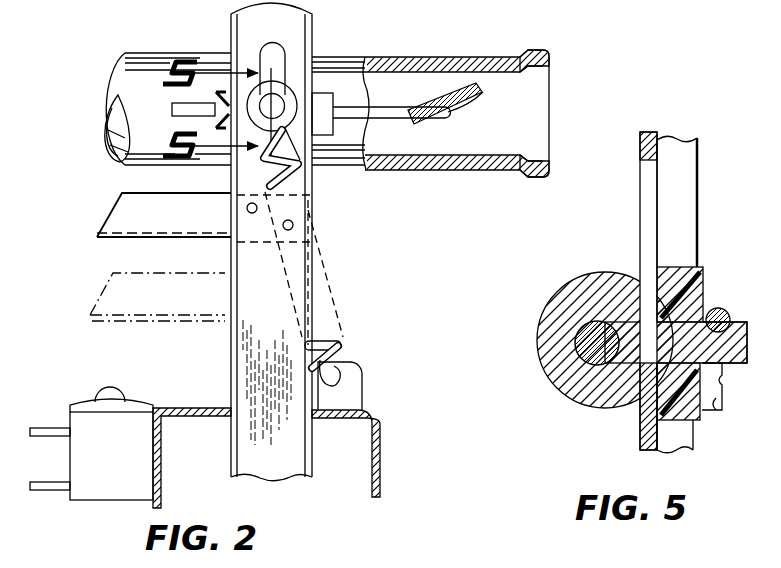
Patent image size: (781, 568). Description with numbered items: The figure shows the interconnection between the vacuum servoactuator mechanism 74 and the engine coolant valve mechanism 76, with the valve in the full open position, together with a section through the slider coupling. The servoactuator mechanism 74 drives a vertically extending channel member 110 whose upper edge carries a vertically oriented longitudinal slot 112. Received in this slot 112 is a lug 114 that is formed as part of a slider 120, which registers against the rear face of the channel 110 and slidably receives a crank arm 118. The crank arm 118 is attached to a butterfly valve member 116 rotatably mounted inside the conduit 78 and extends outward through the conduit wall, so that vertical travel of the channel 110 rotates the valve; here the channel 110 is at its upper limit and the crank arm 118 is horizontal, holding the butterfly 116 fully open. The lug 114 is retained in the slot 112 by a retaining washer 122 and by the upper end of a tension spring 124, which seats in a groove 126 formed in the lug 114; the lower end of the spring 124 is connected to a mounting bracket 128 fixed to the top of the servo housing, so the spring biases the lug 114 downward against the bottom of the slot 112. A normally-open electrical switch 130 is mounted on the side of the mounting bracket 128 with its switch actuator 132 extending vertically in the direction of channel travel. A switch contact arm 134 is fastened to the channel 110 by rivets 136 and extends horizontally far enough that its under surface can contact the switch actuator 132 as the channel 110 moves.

In FIG. 2, the vacuum servoactuator mechanism 74 is at (392, 386).
In FIG. 2, the coolant valve mechanism 76 is at (443, 90).
In FIG. 2, the conduit 78 is at (333, 60).
In FIG. 2, the channel member 110 is at (285, 345).
In FIG. 5, the channel member 110 is at (698, 188).
In FIG. 2, the longitudinal slot 112 is at (266, 50).
In FIG. 5, the longitudinal slot 112 is at (643, 160).
In FIG. 2, the lug 114 is at (300, 160).
In FIG. 5, the lug 114 is at (732, 318).
In FIG. 2, the butterfly valve member 116 is at (484, 93).
In FIG. 2, the crank arm 118 is at (368, 108).
In FIG. 5, the crank arm 118 is at (580, 355).
In FIG. 5, the slider 120 is at (560, 292).
In FIG. 5, the retaining washer 122 is at (683, 267).
In FIG. 2, the tension spring 124 is at (262, 178).
In FIG. 5, the tension spring 124 is at (712, 322).
In FIG. 5, the groove 126 is at (722, 380).
In FIG. 2, the mounting bracket 128 is at (378, 410).
In FIG. 2, the normally-open electrical switch 130 is at (72, 482).
In FIG. 2, the switch actuator 132 is at (106, 398).
In FIG. 2, the switch contact arm 134 is at (100, 220).
In FIG. 2, the rivets 136 is at (284, 230).